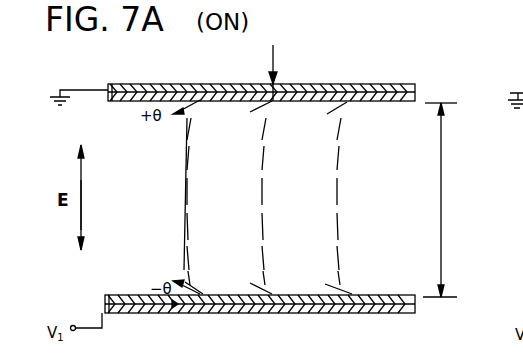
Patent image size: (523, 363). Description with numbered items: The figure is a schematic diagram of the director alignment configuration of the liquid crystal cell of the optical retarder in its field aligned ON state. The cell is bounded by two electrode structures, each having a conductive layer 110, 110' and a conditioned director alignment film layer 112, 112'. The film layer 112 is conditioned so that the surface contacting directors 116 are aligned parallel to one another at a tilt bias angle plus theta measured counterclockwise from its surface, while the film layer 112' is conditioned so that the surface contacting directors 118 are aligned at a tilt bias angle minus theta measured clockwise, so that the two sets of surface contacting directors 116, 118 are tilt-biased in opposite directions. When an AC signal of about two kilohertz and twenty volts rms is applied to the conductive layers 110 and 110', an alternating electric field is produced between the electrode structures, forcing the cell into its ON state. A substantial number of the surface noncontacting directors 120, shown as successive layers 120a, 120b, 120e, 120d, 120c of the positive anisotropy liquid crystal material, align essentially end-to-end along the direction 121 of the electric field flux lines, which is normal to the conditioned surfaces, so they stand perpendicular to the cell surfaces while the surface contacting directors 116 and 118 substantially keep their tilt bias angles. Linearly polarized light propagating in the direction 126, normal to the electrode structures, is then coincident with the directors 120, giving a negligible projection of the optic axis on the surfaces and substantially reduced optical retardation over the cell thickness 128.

The conductive layer 110 is at (239, 78).
The film layer 112 is at (103, 107).
The conductive layer 110' is at (230, 304).
The film layer 112' is at (110, 286).
The surface contacting directors 116 is at (192, 106).
The surface contacting directors 118 is at (194, 288).
The surface noncontacting directors 120 is at (186, 173).
The liquid crystal molecule layer a 120a is at (190, 127).
The liquid crystal molecule layer b 120b is at (188, 156).
The liquid crystal molecule layer c 120c is at (190, 260).
The liquid crystal molecule layer d 120d is at (189, 228).
The liquid crystal molecule layer e 120e is at (188, 195).
The direction of the electric field flux lines 121 is at (81, 217).
The direction of light propagation 126 is at (273, 56).
The thickness 128 is at (441, 197).